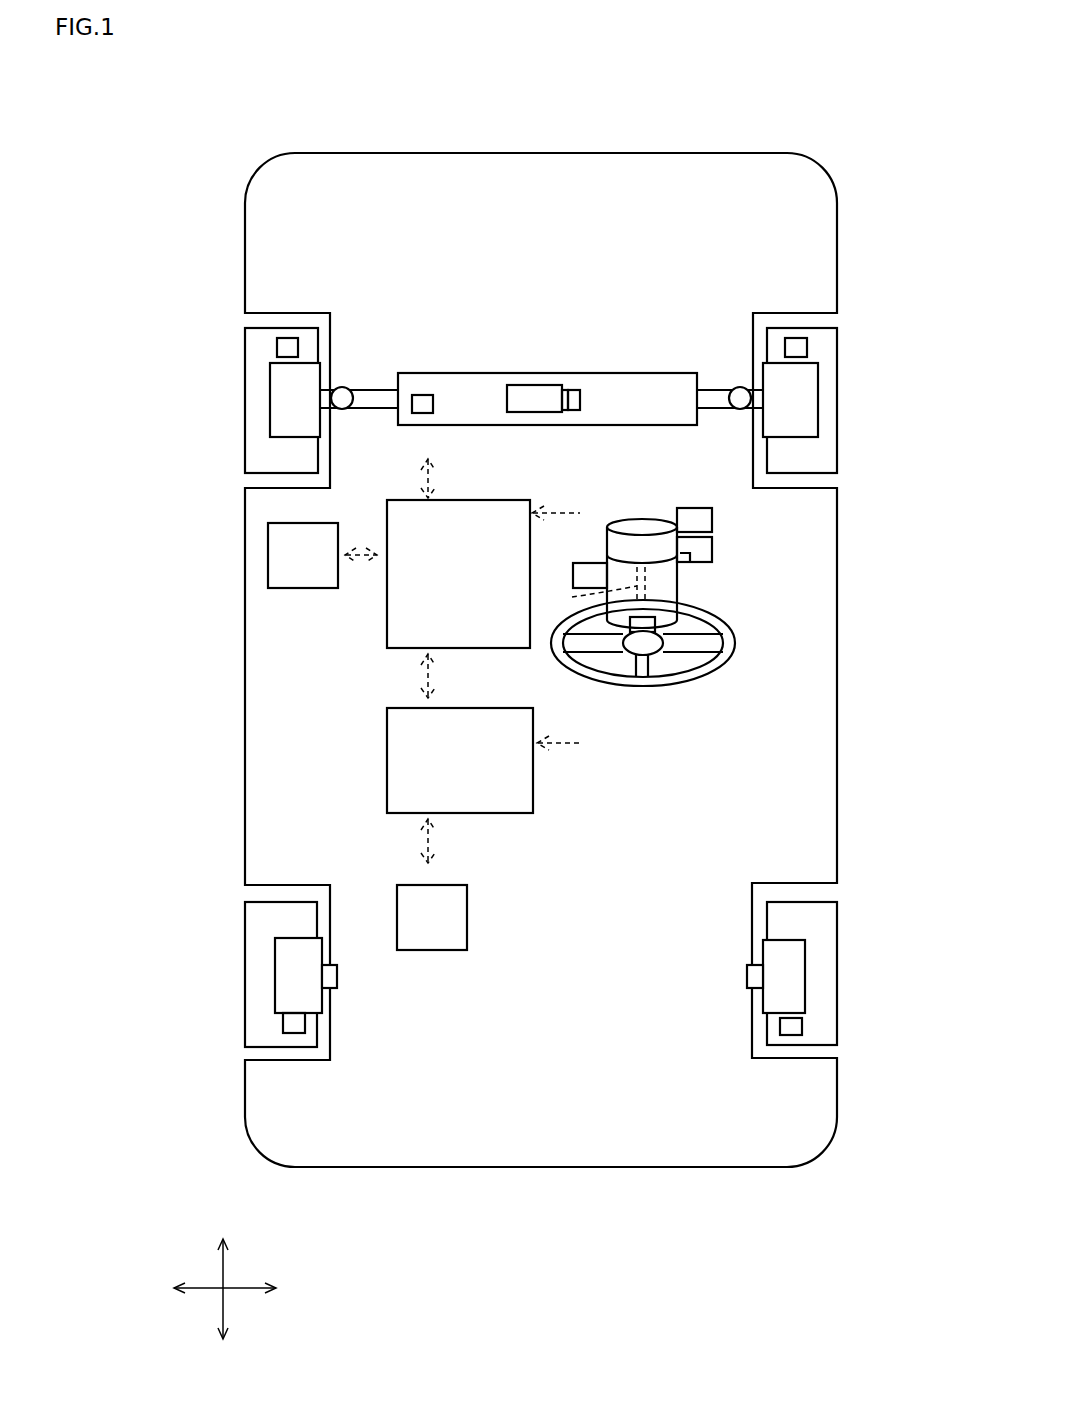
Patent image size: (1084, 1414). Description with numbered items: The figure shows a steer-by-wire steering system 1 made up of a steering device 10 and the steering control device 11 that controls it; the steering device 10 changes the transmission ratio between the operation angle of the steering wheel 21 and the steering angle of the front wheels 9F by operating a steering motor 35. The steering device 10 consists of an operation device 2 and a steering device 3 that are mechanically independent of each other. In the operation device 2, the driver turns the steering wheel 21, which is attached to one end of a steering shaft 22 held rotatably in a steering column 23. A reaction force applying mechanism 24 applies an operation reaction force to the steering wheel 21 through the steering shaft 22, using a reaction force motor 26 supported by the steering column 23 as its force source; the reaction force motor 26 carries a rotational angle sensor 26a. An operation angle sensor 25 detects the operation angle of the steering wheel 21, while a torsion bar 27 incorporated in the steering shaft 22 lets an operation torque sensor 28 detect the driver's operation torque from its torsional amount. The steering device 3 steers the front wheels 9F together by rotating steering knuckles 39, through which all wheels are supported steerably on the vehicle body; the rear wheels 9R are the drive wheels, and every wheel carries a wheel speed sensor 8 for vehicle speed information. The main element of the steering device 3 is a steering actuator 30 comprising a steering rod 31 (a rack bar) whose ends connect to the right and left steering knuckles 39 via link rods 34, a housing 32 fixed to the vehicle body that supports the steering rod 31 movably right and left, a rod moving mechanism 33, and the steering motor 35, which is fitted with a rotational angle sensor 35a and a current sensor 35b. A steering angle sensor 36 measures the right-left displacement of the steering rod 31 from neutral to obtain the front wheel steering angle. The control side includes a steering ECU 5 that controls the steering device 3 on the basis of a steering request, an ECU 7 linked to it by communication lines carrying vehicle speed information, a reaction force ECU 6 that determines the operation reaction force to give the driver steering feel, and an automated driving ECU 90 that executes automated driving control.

The steering system 1 is at (170, 100).
The steering device 10 is at (524, 226).
The steering device 3 is at (354, 242).
The steering actuator 30 is at (450, 298).
The steering rod 31 is at (362, 390).
The housing 32 is at (620, 378).
The rod moving mechanism 33 is at (620, 418).
The link rod 34 is at (328, 392).
The steering motor 35 is at (530, 392).
The rotational angle sensor 35a is at (565, 390).
The current sensor 35b is at (576, 390).
The steering angle sensor 36 is at (422, 394).
The front wheels 9F is at (245, 397).
The rear wheels 9R is at (245, 910).
The steering knuckle 39 is at (270, 381).
The wheel speed sensor 8 is at (280, 346).
The steering control device 11 is at (360, 616).
The steering ECU 5 is at (405, 500).
The reaction force ECU 6 is at (387, 745).
The ECU 7 is at (280, 554).
The automated driving ECU 90 is at (468, 920).
The operation device 2 is at (746, 628).
The steering wheel 21 is at (695, 681).
The steering shaft 22 is at (672, 650).
The steering column 23 is at (668, 583).
The reaction force applying mechanism 24 is at (643, 530).
The operation angle sensor 25 is at (703, 520).
The reaction force motor 26 is at (703, 552).
The rotational angle sensor 26a is at (685, 558).
The torsion bar 27 is at (590, 599).
The operation torque sensor 28 is at (600, 570).